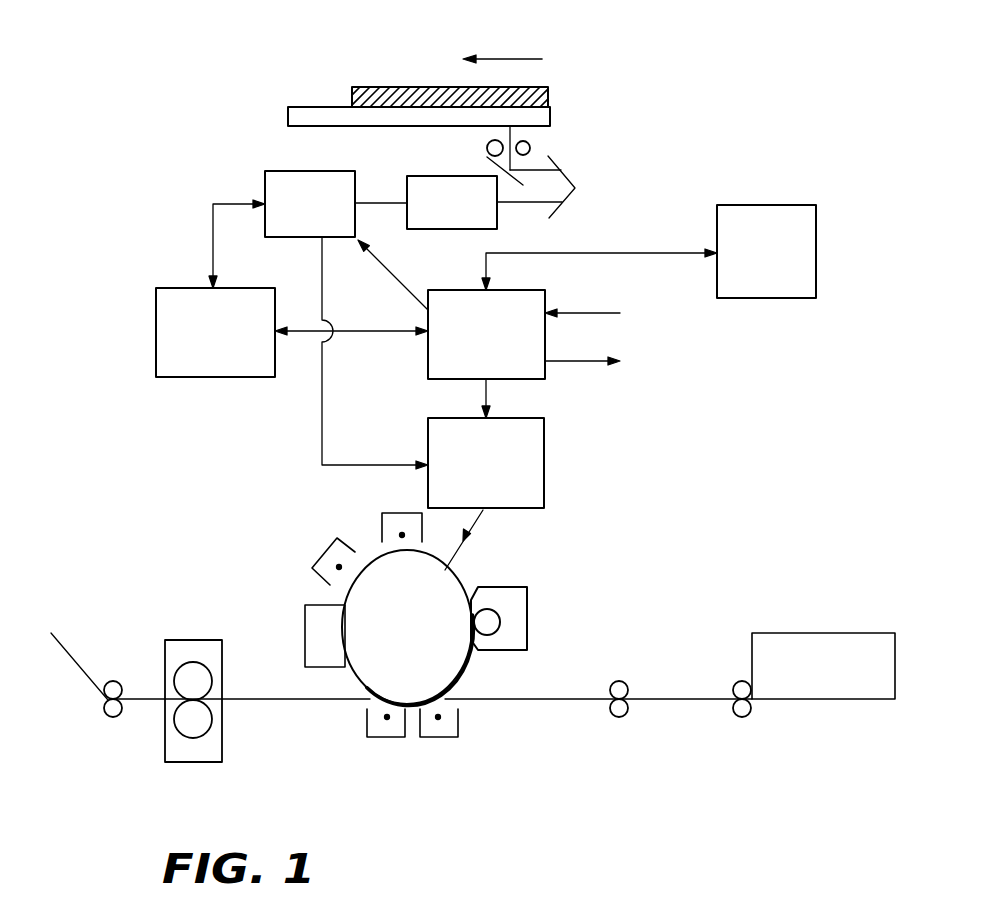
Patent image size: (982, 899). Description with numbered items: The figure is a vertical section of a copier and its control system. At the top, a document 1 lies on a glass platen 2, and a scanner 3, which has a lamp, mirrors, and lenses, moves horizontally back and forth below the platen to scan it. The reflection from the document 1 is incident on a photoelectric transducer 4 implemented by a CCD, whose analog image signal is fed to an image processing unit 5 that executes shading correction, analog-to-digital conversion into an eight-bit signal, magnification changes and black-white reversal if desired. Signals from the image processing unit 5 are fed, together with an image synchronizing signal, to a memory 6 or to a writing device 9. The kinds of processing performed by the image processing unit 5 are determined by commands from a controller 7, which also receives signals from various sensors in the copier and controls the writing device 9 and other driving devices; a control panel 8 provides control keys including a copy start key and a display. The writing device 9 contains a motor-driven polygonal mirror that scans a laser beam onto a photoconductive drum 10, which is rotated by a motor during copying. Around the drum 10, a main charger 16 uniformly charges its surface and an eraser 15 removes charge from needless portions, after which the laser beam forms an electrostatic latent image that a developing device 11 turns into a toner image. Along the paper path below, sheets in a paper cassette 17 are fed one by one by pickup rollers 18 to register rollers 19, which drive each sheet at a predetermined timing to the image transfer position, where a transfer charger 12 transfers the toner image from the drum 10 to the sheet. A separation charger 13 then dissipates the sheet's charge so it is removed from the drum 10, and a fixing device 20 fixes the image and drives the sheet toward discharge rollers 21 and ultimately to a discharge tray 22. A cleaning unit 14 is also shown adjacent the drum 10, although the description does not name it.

The document 1 is at (428, 87).
The glass platen 2 is at (312, 107).
The scanner 3 is at (600, 105).
The photoelectric transducer 4 is at (460, 230).
The image processing unit 5 is at (273, 170).
The memory 6 is at (155, 333).
The controller 7 is at (545, 370).
The control panel 8 is at (775, 298).
The writing device 9 is at (544, 466).
The drum 10 is at (470, 597).
The developing device 11 is at (520, 587).
The transfer charger 12 is at (438, 738).
The separation charger 13 is at (385, 738).
The cleaning unit 14 is at (325, 603).
The eraser 15 is at (330, 552).
The main charger 16 is at (405, 513).
The paper cassette 17 is at (835, 688).
The pickup rollers 18 is at (740, 680).
The register rollers 19 is at (619, 718).
The fixing device 20 is at (222, 735).
The discharge rollers 21 is at (117, 722).
The discharge tray 22 is at (73, 663).